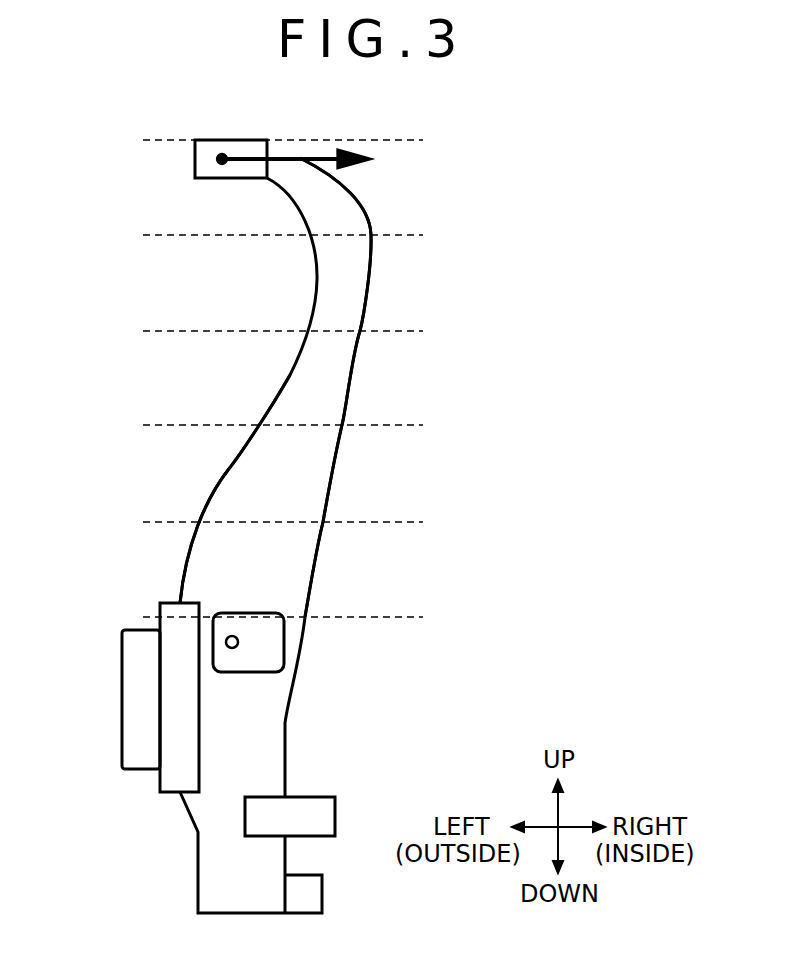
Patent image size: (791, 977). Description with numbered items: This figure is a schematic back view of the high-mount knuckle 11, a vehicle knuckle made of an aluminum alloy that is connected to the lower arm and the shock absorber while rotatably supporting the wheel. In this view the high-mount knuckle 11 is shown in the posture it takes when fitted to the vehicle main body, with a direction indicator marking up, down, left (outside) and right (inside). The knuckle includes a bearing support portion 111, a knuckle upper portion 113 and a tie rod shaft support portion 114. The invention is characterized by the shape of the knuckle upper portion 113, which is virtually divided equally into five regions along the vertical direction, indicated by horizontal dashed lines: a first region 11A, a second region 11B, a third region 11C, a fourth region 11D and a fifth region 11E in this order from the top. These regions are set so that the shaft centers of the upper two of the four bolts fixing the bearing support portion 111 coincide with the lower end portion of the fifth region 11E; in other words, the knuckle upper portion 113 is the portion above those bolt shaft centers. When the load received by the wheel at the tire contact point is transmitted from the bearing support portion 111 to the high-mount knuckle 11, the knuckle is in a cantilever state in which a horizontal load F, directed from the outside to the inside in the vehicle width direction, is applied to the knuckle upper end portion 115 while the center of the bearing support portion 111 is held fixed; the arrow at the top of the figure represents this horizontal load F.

The high-mount knuckle 11 is at (208, 885).
The first region 11A is at (345, 203).
The second region 11B is at (353, 288).
The third region 11C is at (333, 380).
The fourth region 11D is at (318, 480).
The fifth region 11E is at (298, 577).
The bearing support portion 111 is at (133, 703).
The knuckle upper portion 113 is at (245, 473).
The tie rod shaft support portion 114 is at (303, 807).
The knuckle upper end portion 115 is at (237, 148).
The horizontal load F is at (322, 158).